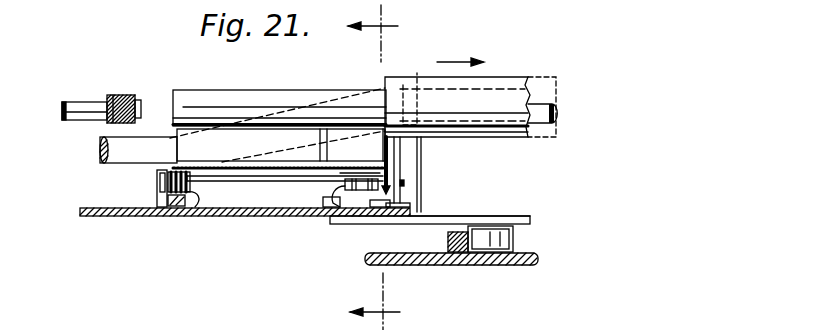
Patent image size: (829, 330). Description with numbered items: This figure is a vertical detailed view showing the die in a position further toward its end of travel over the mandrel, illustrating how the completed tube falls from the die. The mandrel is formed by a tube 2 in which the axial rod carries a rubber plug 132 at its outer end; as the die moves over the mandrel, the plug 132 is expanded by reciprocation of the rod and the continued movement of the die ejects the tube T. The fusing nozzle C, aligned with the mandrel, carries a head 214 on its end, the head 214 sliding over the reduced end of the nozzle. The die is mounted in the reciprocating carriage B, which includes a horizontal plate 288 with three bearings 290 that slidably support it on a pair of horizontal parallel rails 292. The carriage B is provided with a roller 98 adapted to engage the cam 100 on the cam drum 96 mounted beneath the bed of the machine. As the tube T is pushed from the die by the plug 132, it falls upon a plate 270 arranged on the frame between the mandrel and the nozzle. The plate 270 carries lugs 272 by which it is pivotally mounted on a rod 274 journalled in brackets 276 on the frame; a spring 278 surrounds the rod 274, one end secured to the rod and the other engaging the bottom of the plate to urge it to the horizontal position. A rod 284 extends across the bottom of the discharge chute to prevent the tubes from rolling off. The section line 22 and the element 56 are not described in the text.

The fusing nozzle C is at (68, 102).
The head 214 is at (113, 97).
The tube T is at (283, 112).
The bearings 290 is at (345, 143).
The rubber plug 132 is at (392, 110).
The tube 2 is at (557, 77).
The rail 56 is at (510, 138).
The horizontal parallel rails 292 is at (100, 151).
The lugs 272 is at (158, 181).
The brackets 276 is at (173, 210).
The spring 278 is at (197, 193).
The plate 270 is at (256, 176).
The rod 274 is at (292, 182).
The rod 284 is at (343, 187).
The reciprocating carriage B is at (492, 207).
The horizontal plate 288 is at (532, 219).
The cam 100 is at (448, 240).
The roller 98 is at (514, 238).
The cam drum 96 is at (442, 266).
The section line 22- 22 is at (416, 167).